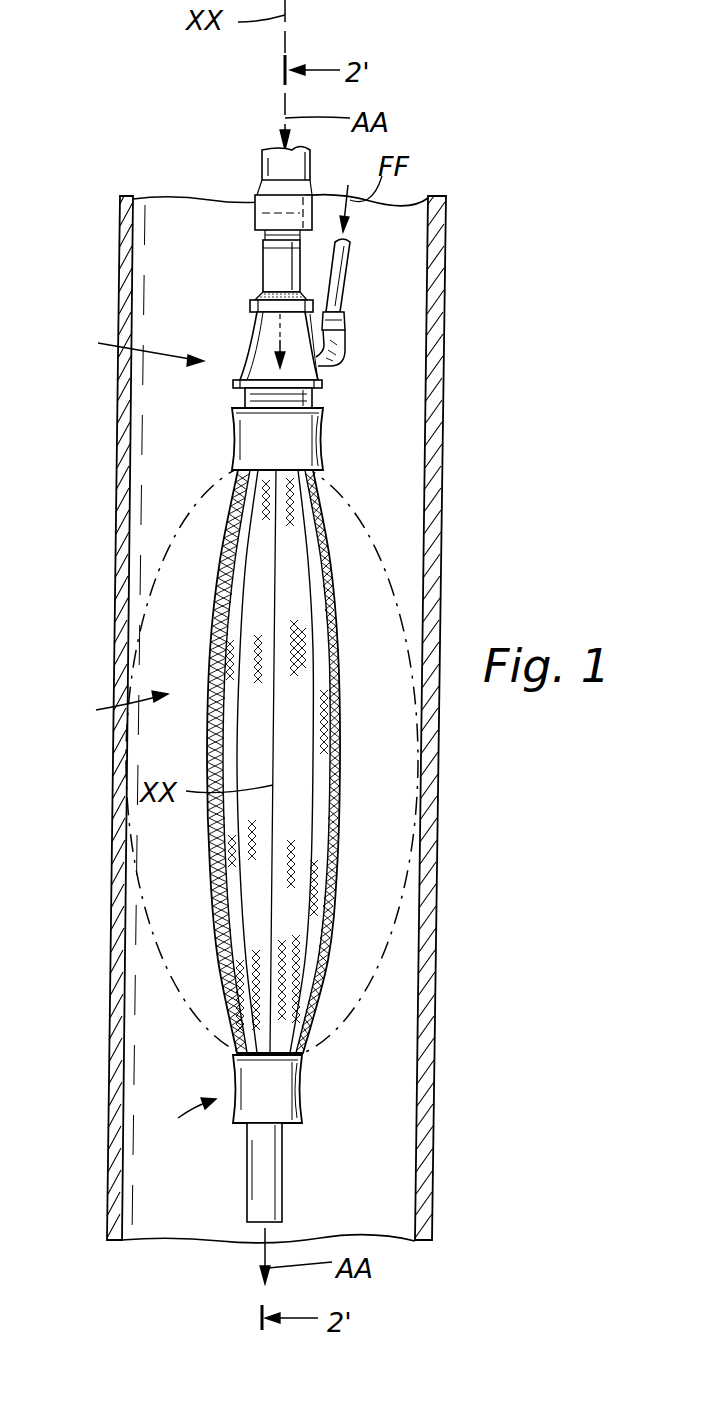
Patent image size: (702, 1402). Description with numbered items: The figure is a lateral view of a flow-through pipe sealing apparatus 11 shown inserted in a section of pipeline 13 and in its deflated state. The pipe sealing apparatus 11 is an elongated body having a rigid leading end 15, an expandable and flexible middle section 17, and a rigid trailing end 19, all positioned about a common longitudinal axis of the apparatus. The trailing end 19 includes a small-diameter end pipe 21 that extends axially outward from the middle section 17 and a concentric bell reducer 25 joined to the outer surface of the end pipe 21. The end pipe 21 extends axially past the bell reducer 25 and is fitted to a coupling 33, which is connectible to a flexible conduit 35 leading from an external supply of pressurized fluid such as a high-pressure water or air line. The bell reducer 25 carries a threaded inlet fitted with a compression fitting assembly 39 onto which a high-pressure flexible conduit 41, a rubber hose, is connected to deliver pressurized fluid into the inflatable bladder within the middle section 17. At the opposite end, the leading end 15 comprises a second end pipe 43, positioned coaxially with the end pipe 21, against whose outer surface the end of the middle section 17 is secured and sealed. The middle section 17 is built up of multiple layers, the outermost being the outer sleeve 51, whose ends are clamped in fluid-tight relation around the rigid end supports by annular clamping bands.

The pipe sealing apparatus 11 is at (166, 1202).
The pipeline 13 is at (118, 1020).
The leading end 15 is at (128, 343).
The middle section 17 is at (109, 706).
The trailing end 19 is at (177, 1110).
The end pipe 21 is at (273, 262).
The bell reducer 25 is at (251, 330).
The coupling 33 is at (272, 197).
The flexible conduit 35 is at (262, 154).
The compression fitting assembly 39 is at (347, 352).
The high-pressure flexible conduit 41 is at (345, 262).
The second end pipe 43 is at (281, 1172).
The outer sleeve 51 is at (233, 610).